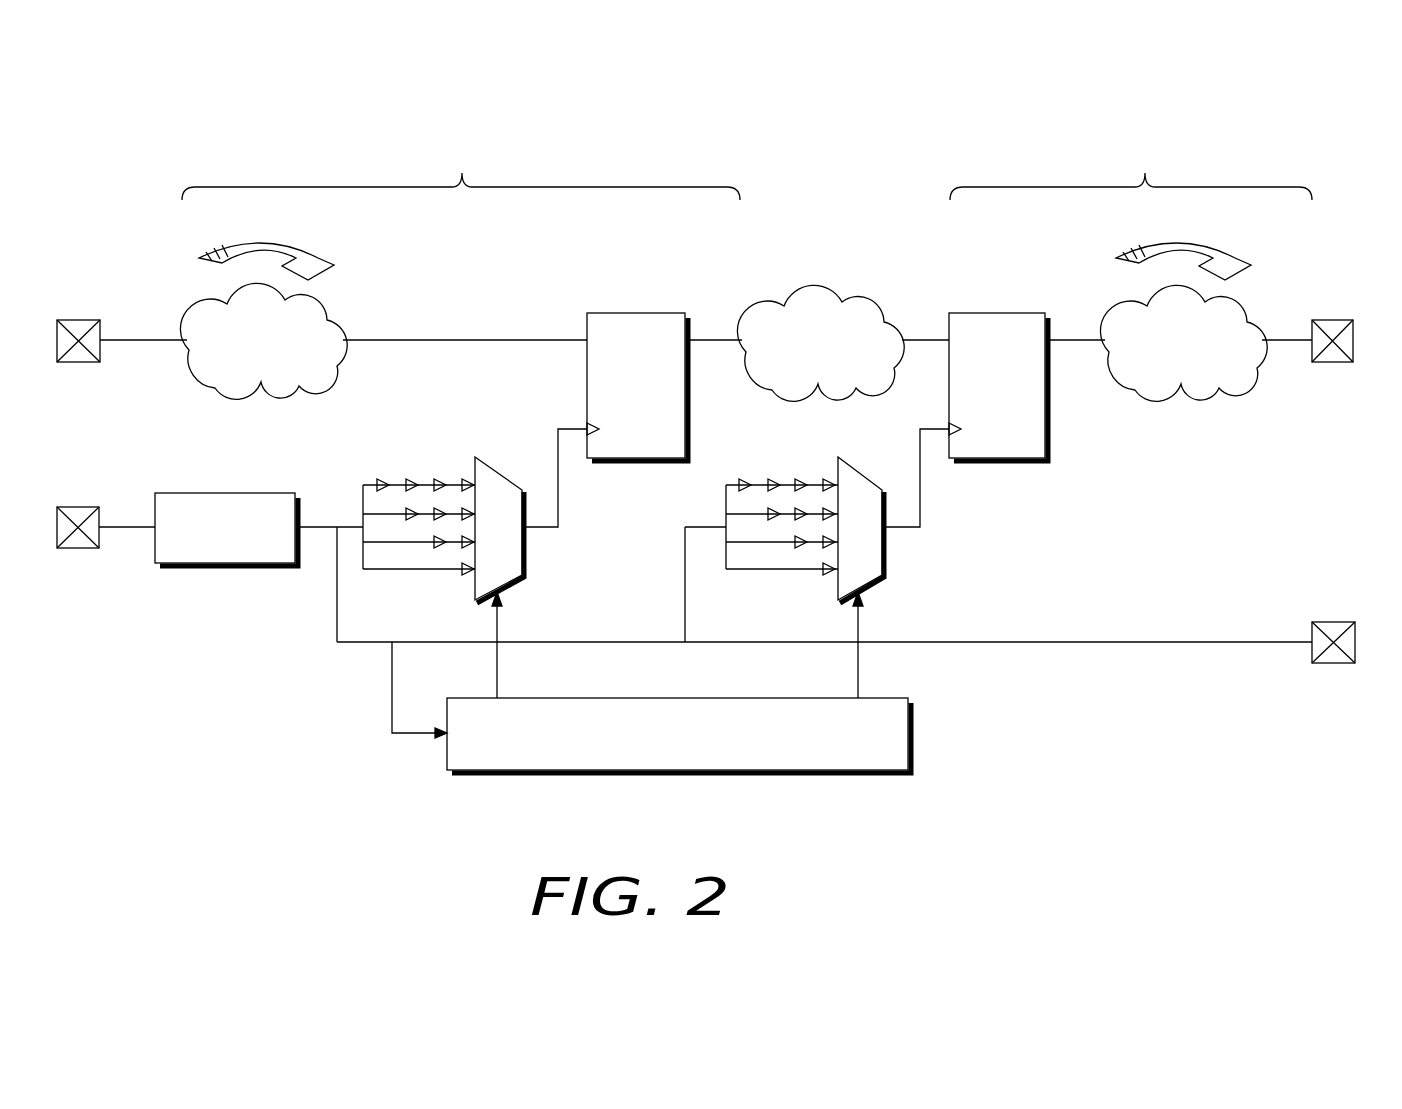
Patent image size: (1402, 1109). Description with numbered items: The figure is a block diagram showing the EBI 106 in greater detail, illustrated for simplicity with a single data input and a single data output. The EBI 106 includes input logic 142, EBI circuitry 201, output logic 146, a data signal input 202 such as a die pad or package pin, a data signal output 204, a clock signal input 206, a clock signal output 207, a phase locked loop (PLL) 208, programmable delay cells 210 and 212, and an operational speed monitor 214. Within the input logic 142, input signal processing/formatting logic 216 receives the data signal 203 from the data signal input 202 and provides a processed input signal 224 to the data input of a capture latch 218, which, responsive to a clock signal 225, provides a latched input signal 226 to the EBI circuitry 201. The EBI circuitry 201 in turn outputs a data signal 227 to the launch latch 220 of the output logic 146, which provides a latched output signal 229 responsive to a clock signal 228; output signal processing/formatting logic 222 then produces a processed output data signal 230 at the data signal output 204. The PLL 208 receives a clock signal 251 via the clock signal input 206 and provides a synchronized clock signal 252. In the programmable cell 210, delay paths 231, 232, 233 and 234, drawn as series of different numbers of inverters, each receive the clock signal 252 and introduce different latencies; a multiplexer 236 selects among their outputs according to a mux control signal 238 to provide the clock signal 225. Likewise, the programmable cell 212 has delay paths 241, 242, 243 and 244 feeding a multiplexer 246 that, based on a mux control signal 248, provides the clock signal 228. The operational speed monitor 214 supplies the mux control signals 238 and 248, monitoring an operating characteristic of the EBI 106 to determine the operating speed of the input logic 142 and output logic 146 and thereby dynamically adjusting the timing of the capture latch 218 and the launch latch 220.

The EBI 106 is at (1032, 746).
The input logic 142 is at (461, 212).
The output logic 146 is at (1131, 212).
The EBI circuitry 201 is at (835, 371).
The data signal input 202 is at (77, 363).
The data signal 203 is at (141, 341).
The data signal output 204 is at (1336, 363).
The clock signal input 206 is at (77, 549).
The clock signal output 207 is at (1336, 664).
The phase locked loop (PLL) 208 is at (215, 489).
The programmable delay cell 210 is at (466, 557).
The programmable delay cell 212 is at (815, 557).
The operational speed monitor 214 is at (813, 761).
The input signal processing/formatting logic 216 is at (259, 401).
The capture latch 218 is at (676, 441).
The launch latch 220 is at (1038, 441).
The output signal processing/formatting logic 222 is at (1219, 401).
The processed input signal 224 is at (421, 341).
The clock signal 225 is at (560, 490).
The latched input signal 226 is at (719, 341).
The data signal 227 is at (921, 341).
The clock signal 228 is at (922, 490).
The latched output signal 229 is at (1084, 341).
The processed output data signal 230 is at (1284, 341).
The delay path 231 is at (437, 571).
The delay path 232 is at (402, 544).
The delay path 233 is at (382, 516).
The delay path 234 is at (375, 482).
The multiplexer 236 is at (524, 556).
The mux control signal 238 is at (498, 622).
The delay path 241 is at (799, 571).
The delay path 242 is at (764, 544).
The delay path 243 is at (744, 516).
The delay path 244 is at (733, 482).
The multiplexer 246 is at (884, 556).
The mux control signal 248 is at (859, 622).
The clock signal 251 is at (126, 528).
The clock signal 252 is at (319, 524).